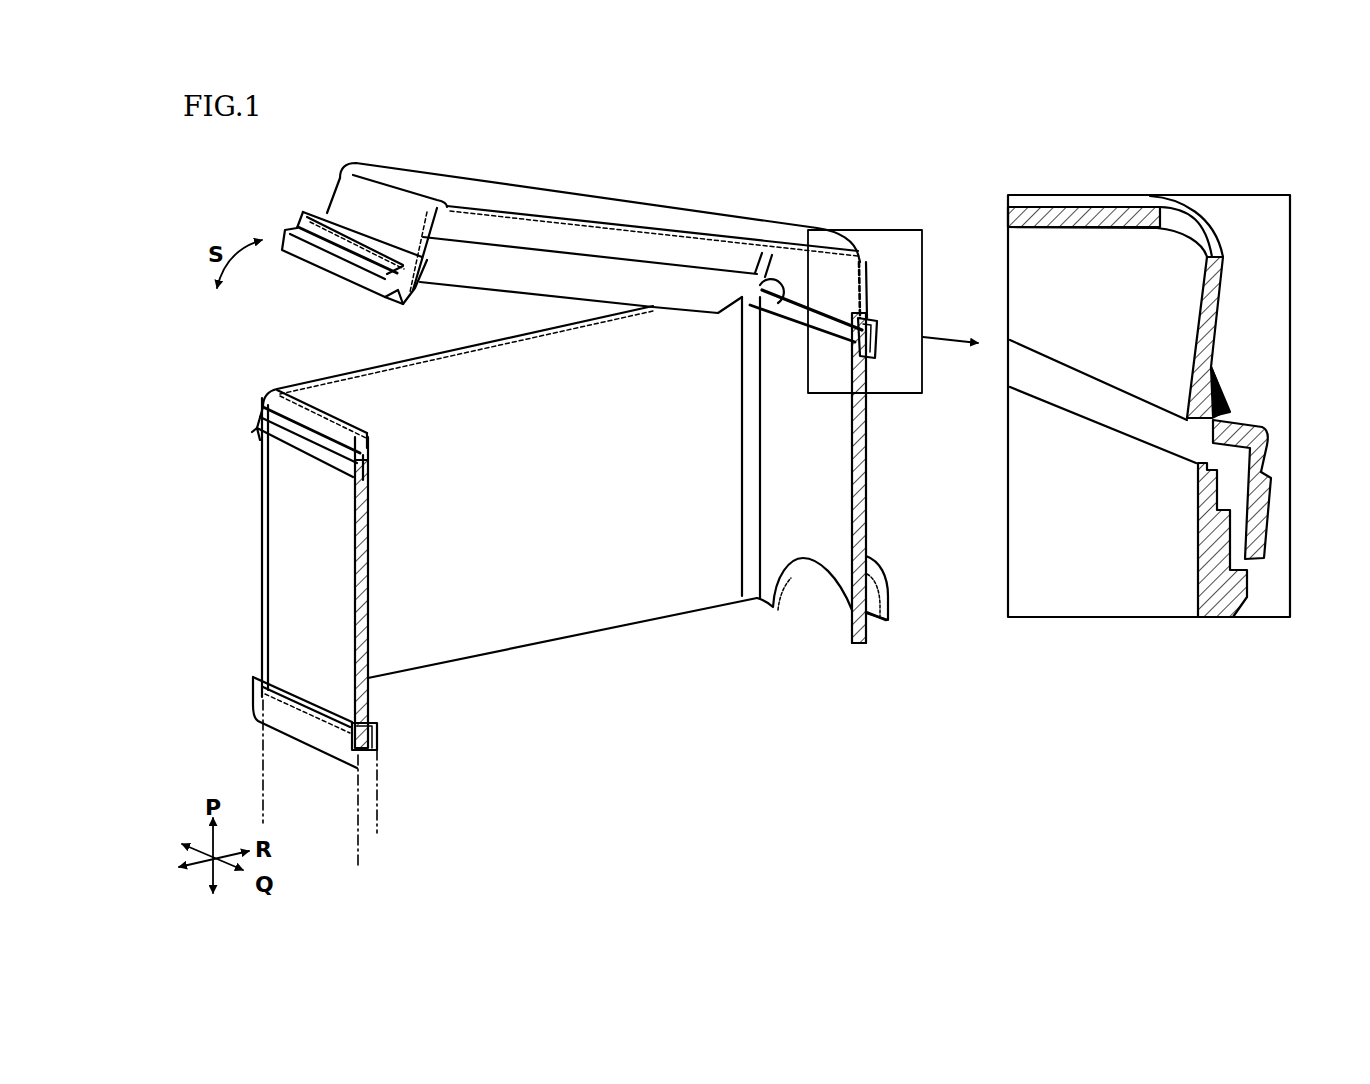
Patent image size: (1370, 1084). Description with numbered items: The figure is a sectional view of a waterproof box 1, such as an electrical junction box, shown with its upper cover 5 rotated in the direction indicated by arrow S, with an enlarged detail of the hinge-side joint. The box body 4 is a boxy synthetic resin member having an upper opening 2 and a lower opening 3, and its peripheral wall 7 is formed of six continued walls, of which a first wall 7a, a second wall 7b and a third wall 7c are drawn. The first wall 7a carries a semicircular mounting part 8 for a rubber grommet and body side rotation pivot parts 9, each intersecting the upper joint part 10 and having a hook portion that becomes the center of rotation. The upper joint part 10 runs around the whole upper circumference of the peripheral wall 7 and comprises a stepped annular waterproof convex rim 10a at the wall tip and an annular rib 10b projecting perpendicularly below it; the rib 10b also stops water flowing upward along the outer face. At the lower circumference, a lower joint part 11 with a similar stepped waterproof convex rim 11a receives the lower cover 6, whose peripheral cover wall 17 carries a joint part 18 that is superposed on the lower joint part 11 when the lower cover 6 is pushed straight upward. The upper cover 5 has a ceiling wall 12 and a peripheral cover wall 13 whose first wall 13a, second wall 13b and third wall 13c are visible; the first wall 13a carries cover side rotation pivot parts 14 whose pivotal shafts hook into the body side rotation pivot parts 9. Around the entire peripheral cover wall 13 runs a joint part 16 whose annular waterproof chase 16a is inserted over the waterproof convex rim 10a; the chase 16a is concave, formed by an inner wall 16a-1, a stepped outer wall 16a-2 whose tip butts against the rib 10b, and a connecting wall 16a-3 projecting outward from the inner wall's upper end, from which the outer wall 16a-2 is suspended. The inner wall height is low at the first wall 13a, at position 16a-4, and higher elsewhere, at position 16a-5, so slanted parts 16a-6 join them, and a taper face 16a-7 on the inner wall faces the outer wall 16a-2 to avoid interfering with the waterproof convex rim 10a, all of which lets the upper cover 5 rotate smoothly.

The waterproof box 1 is at (604, 182).
The upper opening 2 is at (327, 373).
The lower opening 3 is at (593, 670).
The box body 4 is at (656, 622).
The upper cover 5 is at (536, 180).
The lower cover 6 is at (283, 773).
The peripheral wall 7 is at (293, 568).
The first wall 7a is at (866, 457).
The second wall 7b is at (522, 630).
The third wall 7c is at (372, 578).
The mounting part 8 is at (880, 566).
The body side rotation pivot part 9 is at (1045, 537).
The upper joint part 10 is at (278, 461).
The waterproof convex rim 10a is at (370, 461).
The rib 10b is at (330, 477).
The lower joint part 11 is at (288, 691).
The waterproof convex rim 11a is at (380, 736).
The ceiling wall 12 is at (649, 200).
The peripheral wall of the cover 13 is at (352, 190).
The first wall 13a is at (868, 272).
The second wall 13b is at (657, 247).
The third wall 13c is at (427, 247).
The cover side rotation pivot part 14 is at (1226, 395).
The joint part 16 is at (298, 217).
The waterproof chase 16a is at (1232, 462).
The inner wall 16a-1 is at (843, 488).
The outer wall 16a-2 is at (1270, 479).
The connecting wall 16a-3 is at (1240, 428).
The inner wall (low height position) 16a-4 is at (824, 300).
The inner wall (high height position) 16a-5 is at (577, 277).
The slanted part 16a-6 is at (791, 300).
The taper face 16a-7 is at (393, 303).
The peripheral cover wall 17 is at (372, 818).
The joint part 18 is at (250, 708).